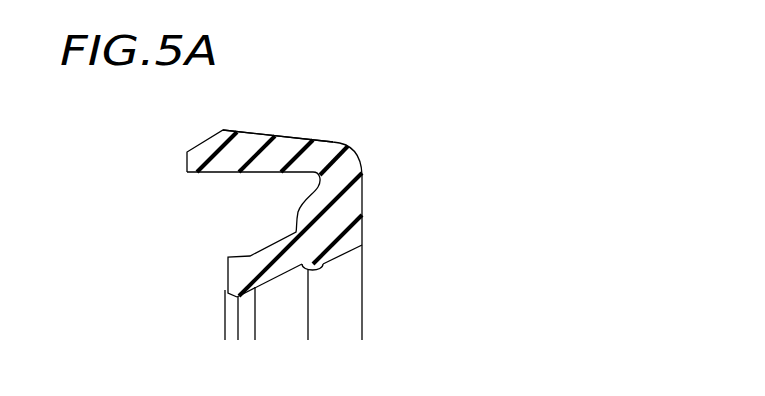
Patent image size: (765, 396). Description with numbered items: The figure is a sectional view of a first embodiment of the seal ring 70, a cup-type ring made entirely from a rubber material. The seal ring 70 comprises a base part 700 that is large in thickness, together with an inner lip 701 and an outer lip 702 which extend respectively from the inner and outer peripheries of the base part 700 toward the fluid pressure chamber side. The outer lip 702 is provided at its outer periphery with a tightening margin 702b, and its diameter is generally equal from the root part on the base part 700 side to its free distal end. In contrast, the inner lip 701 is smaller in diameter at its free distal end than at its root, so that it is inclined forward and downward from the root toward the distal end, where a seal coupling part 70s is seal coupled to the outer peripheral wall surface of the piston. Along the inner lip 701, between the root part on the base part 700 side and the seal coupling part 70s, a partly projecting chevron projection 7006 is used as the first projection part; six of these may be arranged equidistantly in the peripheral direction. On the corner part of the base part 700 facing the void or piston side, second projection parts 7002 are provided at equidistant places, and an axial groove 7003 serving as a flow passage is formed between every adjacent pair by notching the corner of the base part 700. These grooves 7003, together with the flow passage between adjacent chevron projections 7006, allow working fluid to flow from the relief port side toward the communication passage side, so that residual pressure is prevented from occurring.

The seal ring 70 is at (377, 153).
The base part 700 is at (345, 210).
The inner lip 701 is at (280, 268).
The outer lip 702 is at (290, 143).
The tightening margin 702b is at (250, 134).
The second projection part 7002 is at (325, 264).
The axial groove (flow passage) 7003 is at (350, 253).
The chevron projection 7006 is at (313, 270).
The seal coupling part 70s is at (240, 300).